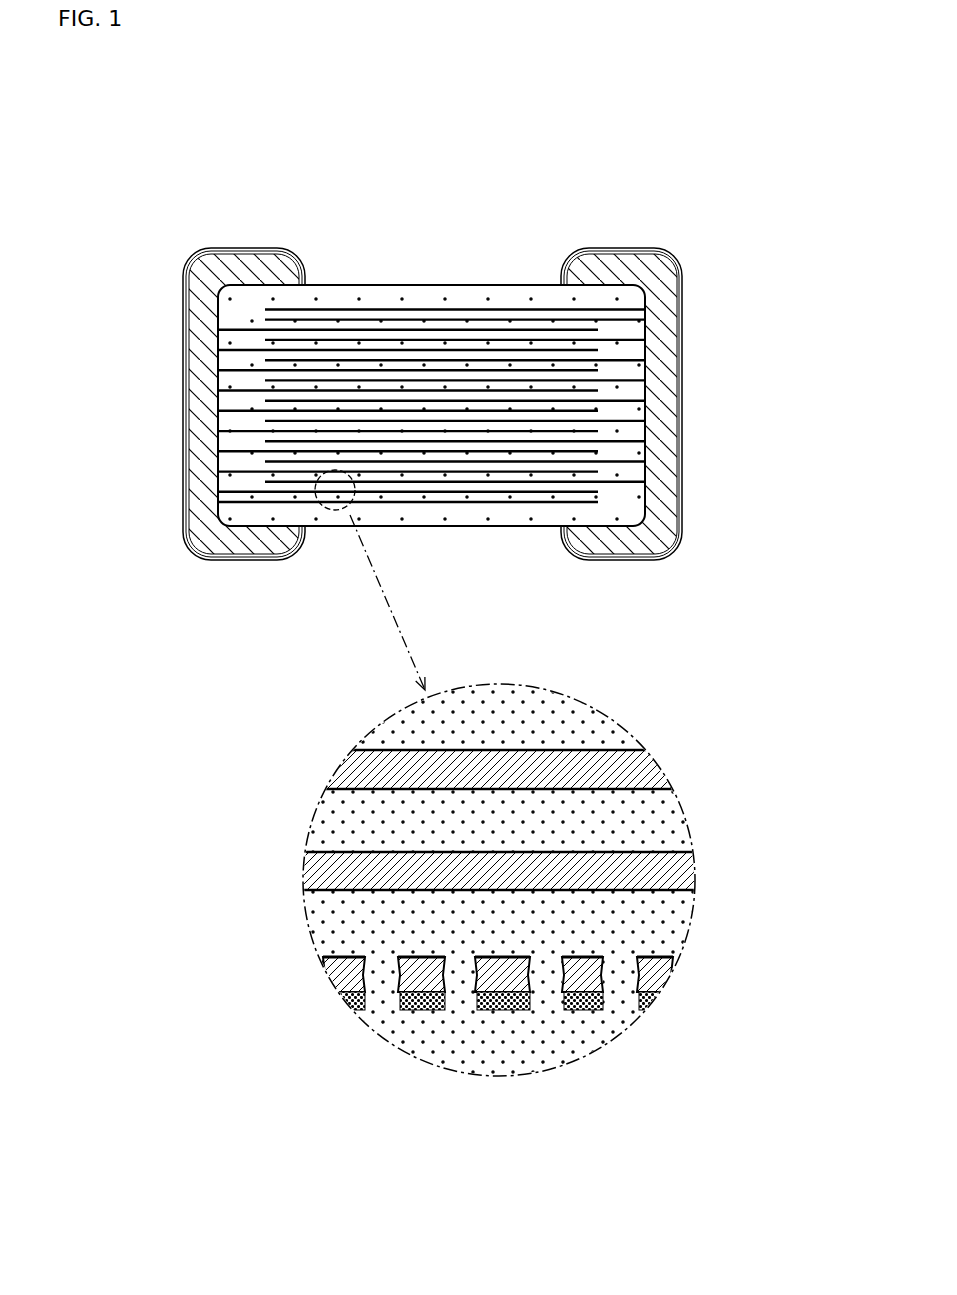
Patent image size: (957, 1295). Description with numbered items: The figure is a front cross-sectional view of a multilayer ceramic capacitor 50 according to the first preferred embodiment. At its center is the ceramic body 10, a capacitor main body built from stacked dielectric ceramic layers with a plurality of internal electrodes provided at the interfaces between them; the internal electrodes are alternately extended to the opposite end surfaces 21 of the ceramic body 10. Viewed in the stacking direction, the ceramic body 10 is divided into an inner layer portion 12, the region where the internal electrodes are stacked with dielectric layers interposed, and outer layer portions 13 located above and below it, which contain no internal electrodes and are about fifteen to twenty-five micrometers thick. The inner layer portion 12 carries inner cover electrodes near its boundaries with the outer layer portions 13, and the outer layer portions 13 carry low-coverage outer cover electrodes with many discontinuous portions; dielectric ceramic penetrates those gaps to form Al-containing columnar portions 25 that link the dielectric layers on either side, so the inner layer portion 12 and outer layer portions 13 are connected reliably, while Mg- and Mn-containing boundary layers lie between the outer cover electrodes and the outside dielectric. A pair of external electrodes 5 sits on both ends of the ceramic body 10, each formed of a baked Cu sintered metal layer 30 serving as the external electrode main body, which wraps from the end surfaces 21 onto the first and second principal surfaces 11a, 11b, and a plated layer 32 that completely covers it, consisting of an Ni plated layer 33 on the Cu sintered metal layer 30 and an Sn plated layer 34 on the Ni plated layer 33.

The multilayer ceramic capacitor 50 is at (578, 174).
The ceramic body 10 is at (388, 270).
The first principal surface 11a is at (472, 285).
The second principal surface 11b is at (331, 527).
The inner layer portion 12 is at (525, 304).
The outer layer portion 13 is at (688, 287).
The end surface 21 is at (218, 324).
The Cu sintered metal layer 30 is at (185, 395).
The external electrode 5 is at (432, 412).
The plated layer 32 is at (459, 463).
The Ni plated layer 33 is at (208, 560).
The Sn plated layer 34 is at (262, 560).
The columnar portion 25 is at (385, 997).